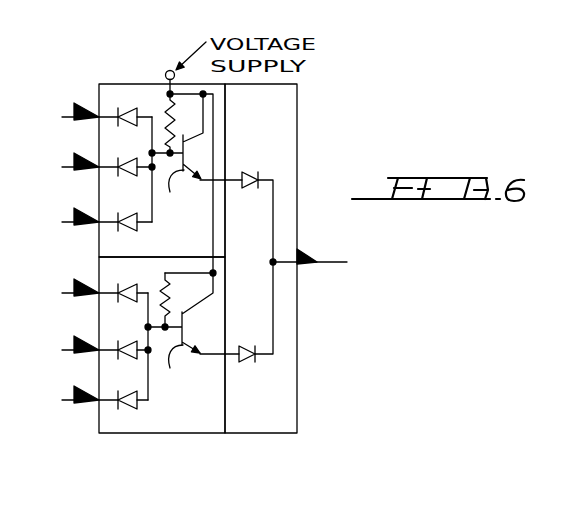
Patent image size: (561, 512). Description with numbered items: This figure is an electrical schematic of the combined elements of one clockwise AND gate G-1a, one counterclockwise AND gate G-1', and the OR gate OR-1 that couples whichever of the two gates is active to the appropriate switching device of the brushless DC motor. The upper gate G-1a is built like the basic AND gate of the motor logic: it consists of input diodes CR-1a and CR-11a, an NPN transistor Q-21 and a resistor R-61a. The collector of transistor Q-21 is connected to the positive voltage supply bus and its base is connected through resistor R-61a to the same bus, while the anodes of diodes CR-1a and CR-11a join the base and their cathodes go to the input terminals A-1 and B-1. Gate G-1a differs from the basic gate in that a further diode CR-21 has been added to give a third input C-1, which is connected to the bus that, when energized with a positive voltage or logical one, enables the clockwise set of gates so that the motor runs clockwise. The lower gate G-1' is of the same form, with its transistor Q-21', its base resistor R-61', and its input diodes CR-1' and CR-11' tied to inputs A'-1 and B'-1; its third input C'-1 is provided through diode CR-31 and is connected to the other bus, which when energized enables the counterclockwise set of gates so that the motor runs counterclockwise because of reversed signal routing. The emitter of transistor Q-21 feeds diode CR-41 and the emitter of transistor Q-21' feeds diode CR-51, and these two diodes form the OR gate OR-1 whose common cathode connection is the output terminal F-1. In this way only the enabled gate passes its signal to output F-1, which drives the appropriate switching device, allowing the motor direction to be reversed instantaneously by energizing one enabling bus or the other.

The AND gate G-1a is at (107, 80).
The AND gate G-1' is at (162, 367).
The OR gate OR-1 is at (297, 114).
The input terminal A-1 is at (79, 108).
The third input C-1 is at (84, 158).
The input terminal B-1 is at (91, 213).
The input A'-1 is at (69, 279).
The third input C'-1 is at (69, 337).
The input B'-1 is at (69, 386).
The diode CR-1a is at (125, 109).
The diode CR-21 is at (125, 160).
The diode CR-11a is at (126, 229).
The diode CR-1' is at (123, 286).
The diode CR-31 is at (125, 340).
The diode CR-11' is at (146, 411).
The resistor R-61a is at (166, 86).
The resistor R-61' is at (187, 300).
The transistor Q-21 is at (188, 153).
The transistor Q-21' is at (186, 335).
The diode CR-41 is at (255, 208).
The diode CR-51 is at (255, 335).
The output terminal F-1 is at (308, 258).